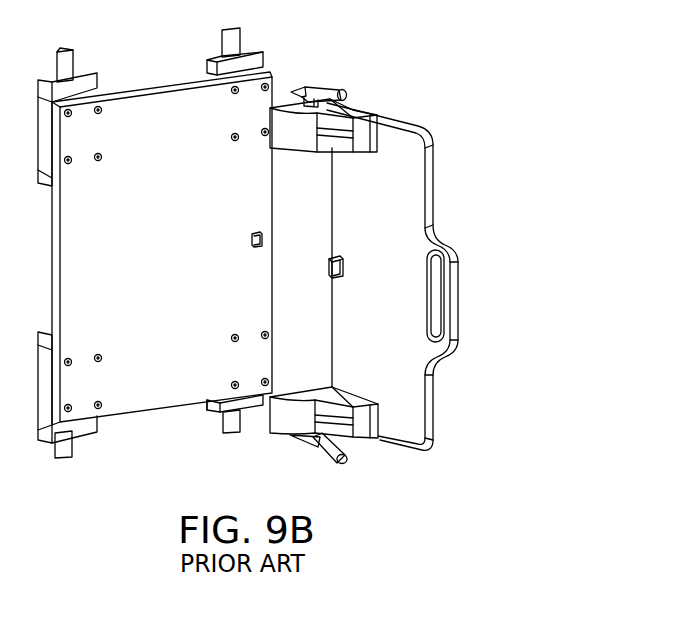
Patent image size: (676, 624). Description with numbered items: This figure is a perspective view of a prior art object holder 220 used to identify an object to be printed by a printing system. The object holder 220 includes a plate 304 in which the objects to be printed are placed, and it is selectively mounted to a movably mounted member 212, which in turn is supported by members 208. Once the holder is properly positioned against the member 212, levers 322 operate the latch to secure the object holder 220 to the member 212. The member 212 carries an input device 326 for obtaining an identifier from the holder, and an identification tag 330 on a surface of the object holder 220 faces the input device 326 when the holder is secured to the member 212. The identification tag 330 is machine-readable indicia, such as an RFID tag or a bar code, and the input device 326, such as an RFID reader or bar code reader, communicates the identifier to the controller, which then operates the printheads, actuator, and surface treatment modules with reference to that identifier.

The movably mounted member 212 is at (156, 82).
The members 208 is at (75, 440).
The object holder 220 is at (470, 277).
The plate 304 is at (413, 185).
The levers 322 is at (332, 90).
The input device 326 is at (250, 243).
The identification tag 330 is at (327, 269).